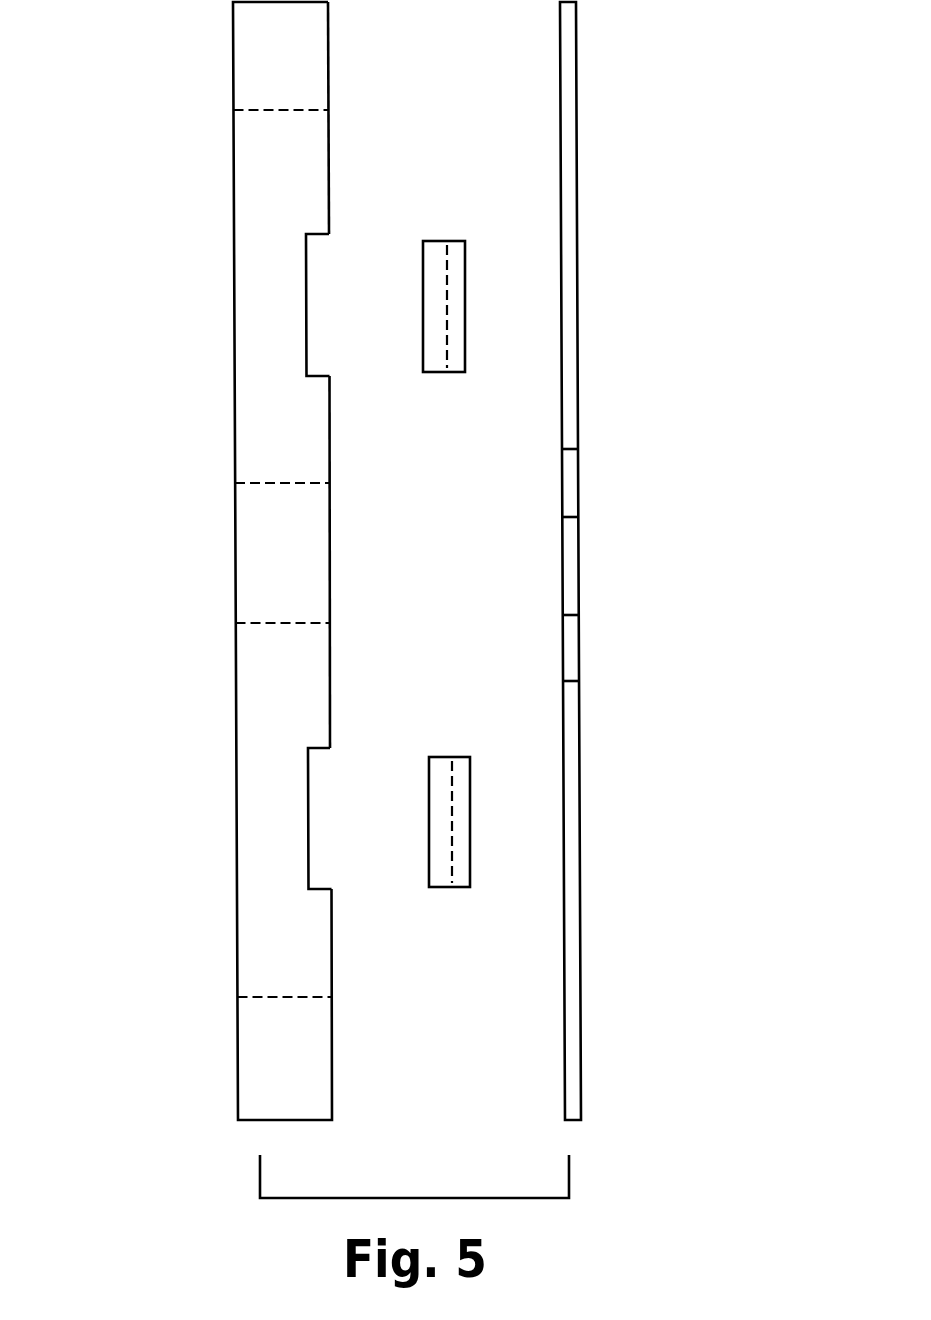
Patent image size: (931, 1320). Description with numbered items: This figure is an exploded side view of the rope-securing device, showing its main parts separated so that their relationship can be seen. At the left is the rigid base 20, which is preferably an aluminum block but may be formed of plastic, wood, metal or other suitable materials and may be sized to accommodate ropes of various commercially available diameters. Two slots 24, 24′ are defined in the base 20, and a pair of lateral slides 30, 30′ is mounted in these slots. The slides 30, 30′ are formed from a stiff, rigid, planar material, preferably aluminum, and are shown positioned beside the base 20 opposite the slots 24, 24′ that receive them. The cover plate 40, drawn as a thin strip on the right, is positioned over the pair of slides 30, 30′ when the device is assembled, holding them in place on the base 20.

The base 20 is at (275, 575).
The slot 24 is at (308, 309).
The slot 24′ is at (313, 818).
The slide 30 is at (434, 260).
The slide 30′ is at (443, 860).
The cover plate 40 is at (570, 165).